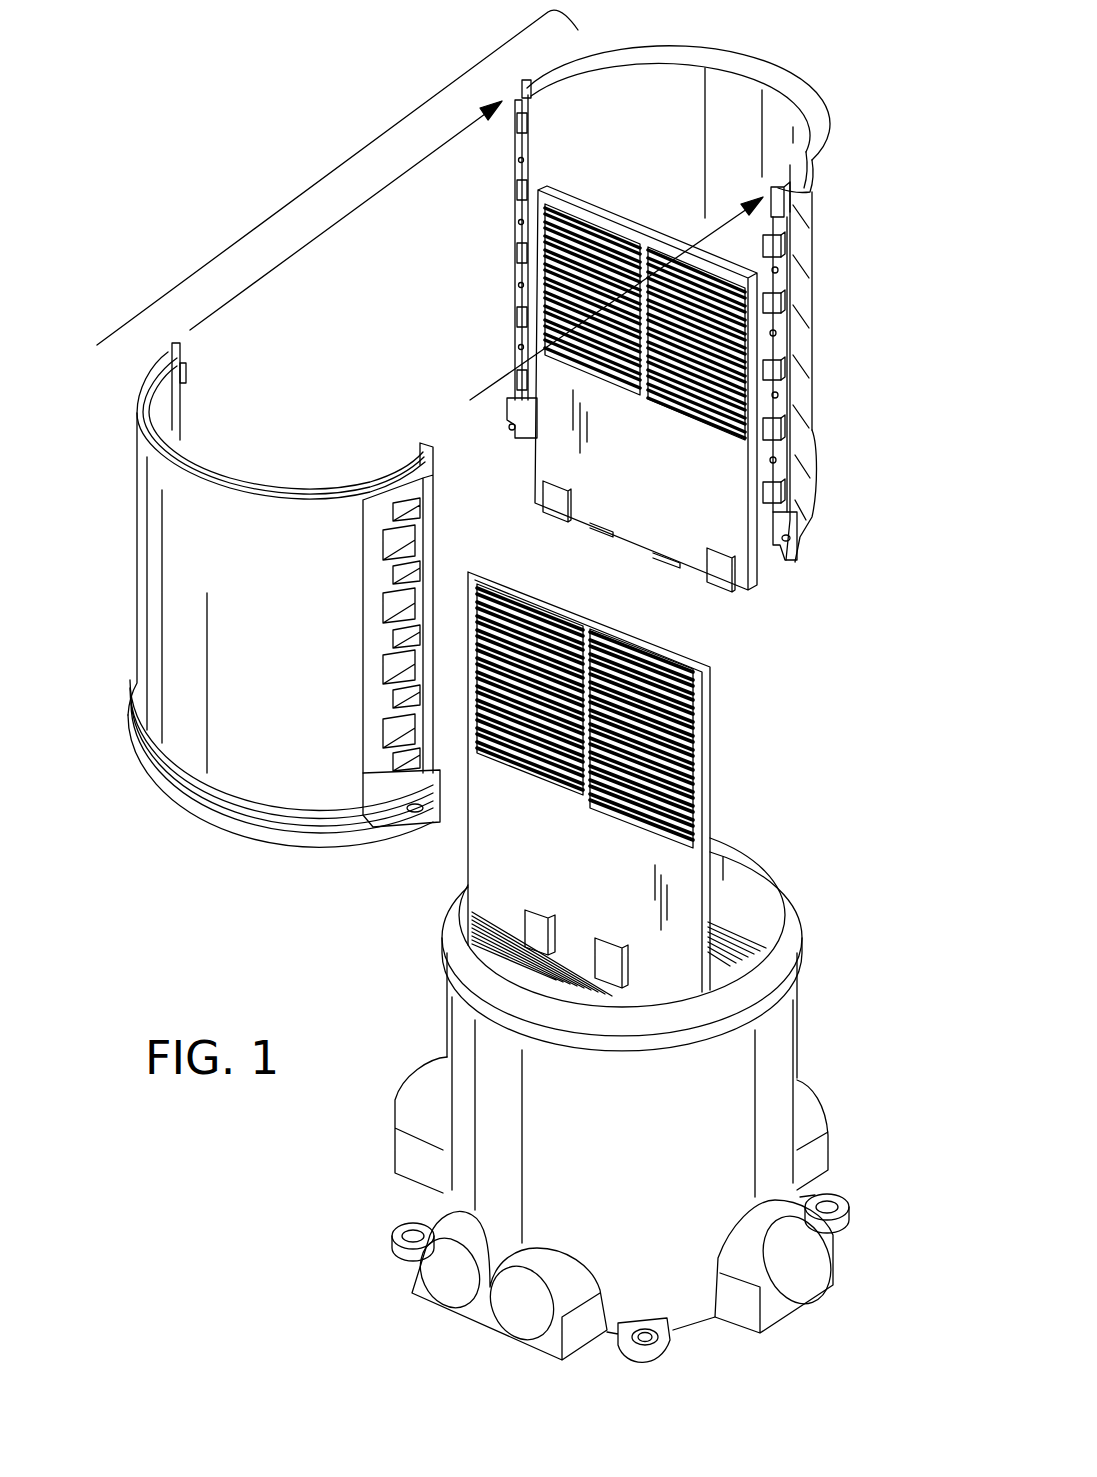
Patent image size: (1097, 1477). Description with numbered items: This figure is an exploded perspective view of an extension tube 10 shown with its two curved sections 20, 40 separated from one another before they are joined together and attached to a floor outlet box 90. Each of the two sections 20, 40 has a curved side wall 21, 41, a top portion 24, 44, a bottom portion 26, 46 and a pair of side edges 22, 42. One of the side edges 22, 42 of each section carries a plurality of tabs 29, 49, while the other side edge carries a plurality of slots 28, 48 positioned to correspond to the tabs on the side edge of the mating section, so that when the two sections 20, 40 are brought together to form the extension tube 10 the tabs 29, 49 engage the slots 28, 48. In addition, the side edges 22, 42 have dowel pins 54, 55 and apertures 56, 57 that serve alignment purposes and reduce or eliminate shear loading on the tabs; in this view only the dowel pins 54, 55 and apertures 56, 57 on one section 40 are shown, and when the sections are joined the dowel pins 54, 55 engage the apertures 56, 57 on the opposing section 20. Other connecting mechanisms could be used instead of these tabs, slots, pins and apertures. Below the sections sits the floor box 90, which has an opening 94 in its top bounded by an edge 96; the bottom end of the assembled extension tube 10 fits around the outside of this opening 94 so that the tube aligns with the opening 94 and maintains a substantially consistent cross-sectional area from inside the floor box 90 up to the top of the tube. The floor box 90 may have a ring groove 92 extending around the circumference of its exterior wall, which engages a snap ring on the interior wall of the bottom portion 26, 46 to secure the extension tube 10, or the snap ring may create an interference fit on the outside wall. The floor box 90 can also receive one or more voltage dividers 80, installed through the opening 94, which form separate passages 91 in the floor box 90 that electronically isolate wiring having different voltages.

The extension tube 10 is at (328, 165).
The curved section 20 is at (150, 585).
The curved side wall 21 is at (137, 645).
The side edge 22 is at (180, 413).
The top portion 24 is at (147, 412).
The bottom portion 26 is at (267, 833).
The slot 28 is at (427, 568).
The tab 29 is at (186, 380).
The curved section 40 is at (815, 287).
The curved side wall 41 is at (590, 137).
The side edge 42 is at (523, 252).
The top portion 44 is at (757, 75).
The bottom portion 46 is at (813, 522).
The slot 48 is at (523, 137).
The tab 49 is at (777, 220).
The dowel pin 54 is at (522, 293).
The dowel pin 55 is at (773, 462).
The aperture 56 is at (522, 337).
The aperture 57 is at (785, 545).
The voltage divider 80 is at (680, 467).
The floor outlet box 90 is at (762, 1073).
The passage 91 is at (797, 940).
The ring groove 92 is at (795, 967).
The opening 94 is at (723, 857).
The edge 96 is at (455, 885).